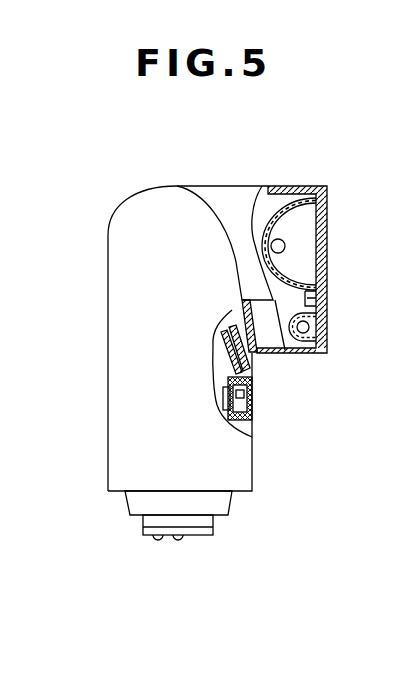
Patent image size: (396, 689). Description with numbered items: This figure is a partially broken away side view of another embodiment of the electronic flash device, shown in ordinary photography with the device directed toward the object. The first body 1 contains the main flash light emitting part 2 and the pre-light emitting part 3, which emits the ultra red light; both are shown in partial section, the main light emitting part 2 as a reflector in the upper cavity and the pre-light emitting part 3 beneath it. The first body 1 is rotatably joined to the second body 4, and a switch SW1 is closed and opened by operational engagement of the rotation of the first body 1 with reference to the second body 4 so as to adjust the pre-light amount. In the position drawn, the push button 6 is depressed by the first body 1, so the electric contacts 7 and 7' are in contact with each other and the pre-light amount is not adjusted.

The first body 1 is at (238, 196).
The main light emitting part 2 is at (307, 245).
The pre-light emitting part 3 is at (313, 325).
The second body 4 is at (127, 338).
The push button 6 is at (240, 336).
The electric contact 7 is at (256, 365).
The electric contact 7' is at (215, 360).
The switch SW1 is at (258, 409).